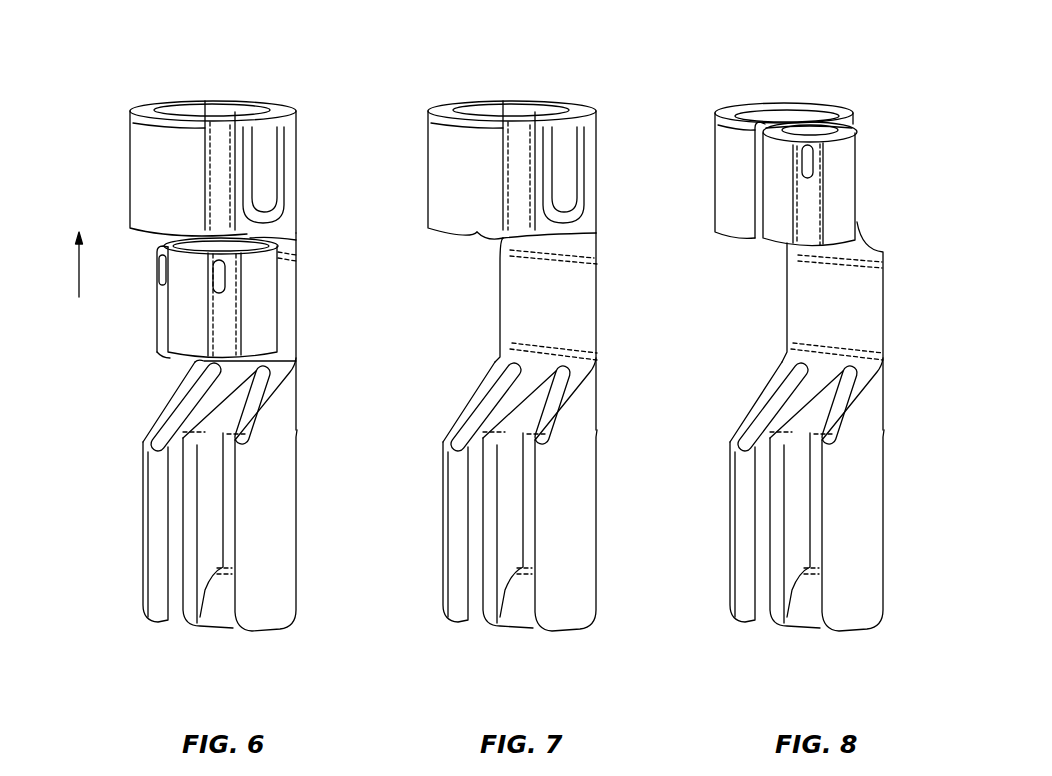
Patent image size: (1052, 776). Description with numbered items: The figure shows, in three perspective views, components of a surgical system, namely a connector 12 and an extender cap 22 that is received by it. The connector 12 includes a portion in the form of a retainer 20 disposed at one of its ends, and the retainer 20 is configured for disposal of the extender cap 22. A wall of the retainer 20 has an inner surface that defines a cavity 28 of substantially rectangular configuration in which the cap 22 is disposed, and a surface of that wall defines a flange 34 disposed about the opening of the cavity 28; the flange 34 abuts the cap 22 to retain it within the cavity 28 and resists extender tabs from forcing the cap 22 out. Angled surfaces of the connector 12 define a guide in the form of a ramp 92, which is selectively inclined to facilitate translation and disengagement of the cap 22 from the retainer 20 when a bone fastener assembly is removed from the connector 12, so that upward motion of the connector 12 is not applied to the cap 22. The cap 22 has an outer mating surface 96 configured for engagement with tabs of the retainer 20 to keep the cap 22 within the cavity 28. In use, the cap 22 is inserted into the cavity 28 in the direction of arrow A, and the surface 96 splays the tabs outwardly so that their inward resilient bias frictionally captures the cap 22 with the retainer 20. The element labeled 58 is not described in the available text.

In FIG. 6, the connector 12 is at (79, 113).
In FIG. 7, the connector 12 is at (379, 113).
In FIG. 8, the connector 12 is at (671, 113).
In FIG. 6, the retainer 20 is at (157, 162).
In FIG. 7, the retainer 20 is at (455, 162).
In FIG. 8, the retainer 20 is at (747, 162).
In FIG. 6, the extender cap 22 is at (187, 327).
In FIG. 7, the extender cap 22 is at (487, 240).
In FIG. 8, the extender cap 22 is at (840, 168).
In FIG. 8, the cavity 28 is at (785, 120).
In FIG. 8, the flange 34 is at (805, 117).
In FIG. 6, the clip 58 is at (115, 528).
In FIG. 7, the clip 58 is at (428, 553).
In FIG. 8, the clip 58 is at (706, 530).
In FIG. 6, the ramp 92 is at (258, 402).
In FIG. 7, the ramp 92 is at (558, 402).
In FIG. 8, the ramp 92 is at (848, 402).
In FIG. 6, the outer mating surface 96 is at (260, 302).
In FIG. 7, the outer mating surface 96 is at (600, 300).
In FIG. 8, the outer mating surface 96 is at (833, 202).
In FIG. 6, the arrow A is at (70, 264).